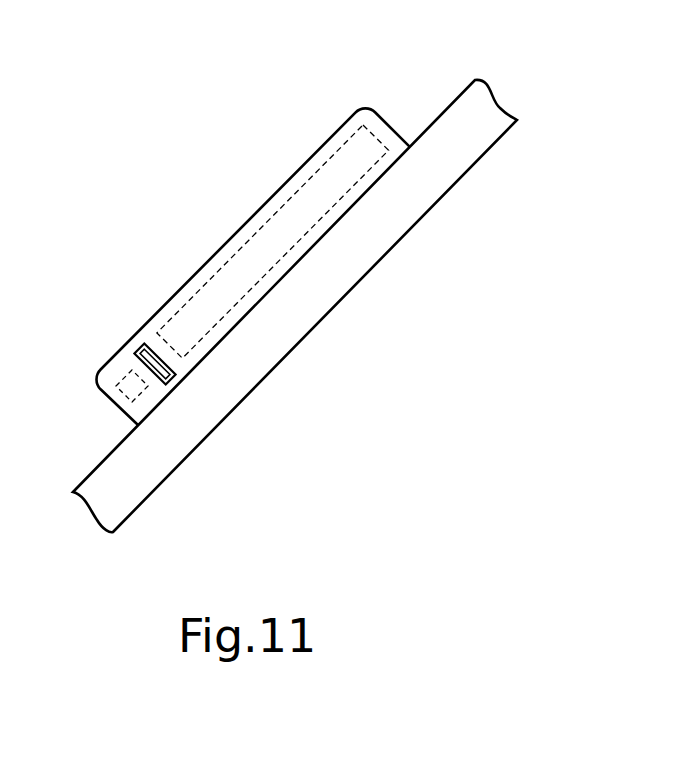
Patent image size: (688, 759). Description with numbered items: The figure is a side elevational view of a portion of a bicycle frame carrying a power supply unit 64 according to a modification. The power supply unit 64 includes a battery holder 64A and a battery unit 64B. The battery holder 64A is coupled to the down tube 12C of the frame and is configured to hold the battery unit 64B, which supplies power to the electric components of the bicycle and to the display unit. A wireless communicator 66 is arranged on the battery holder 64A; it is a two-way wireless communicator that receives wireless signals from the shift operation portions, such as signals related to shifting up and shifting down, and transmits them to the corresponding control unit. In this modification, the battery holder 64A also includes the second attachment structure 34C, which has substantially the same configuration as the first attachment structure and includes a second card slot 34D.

The down tube 12C is at (347, 295).
The power supply unit 64 is at (157, 140).
The battery holder 64A is at (310, 158).
The battery unit 64B is at (233, 256).
The second attachment structure 34C is at (191, 380).
The second card slot 34D is at (172, 362).
The wireless communicator 66 is at (118, 398).